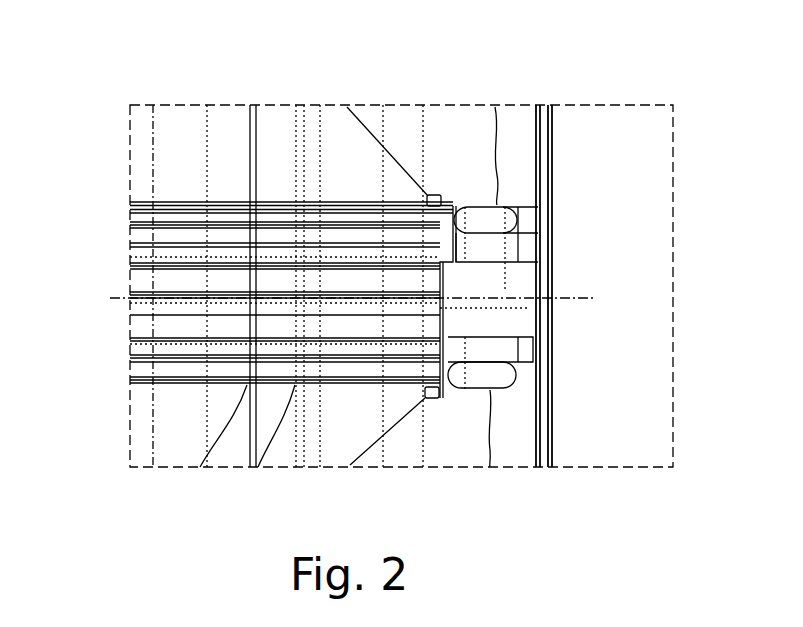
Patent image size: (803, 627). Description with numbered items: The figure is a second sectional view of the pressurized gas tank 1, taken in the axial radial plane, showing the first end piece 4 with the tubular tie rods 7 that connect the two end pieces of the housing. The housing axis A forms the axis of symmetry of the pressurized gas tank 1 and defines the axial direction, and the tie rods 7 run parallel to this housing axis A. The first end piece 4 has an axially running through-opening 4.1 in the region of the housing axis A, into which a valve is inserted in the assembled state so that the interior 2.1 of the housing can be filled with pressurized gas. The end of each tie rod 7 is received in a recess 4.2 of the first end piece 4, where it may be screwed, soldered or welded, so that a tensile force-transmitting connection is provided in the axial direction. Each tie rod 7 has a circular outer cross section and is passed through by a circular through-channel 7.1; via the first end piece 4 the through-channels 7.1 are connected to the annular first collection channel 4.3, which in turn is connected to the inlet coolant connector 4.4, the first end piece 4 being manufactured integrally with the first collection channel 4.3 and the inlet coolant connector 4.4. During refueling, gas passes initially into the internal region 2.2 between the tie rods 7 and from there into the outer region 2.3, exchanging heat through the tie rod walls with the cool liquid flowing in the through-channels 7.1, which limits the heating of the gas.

The pressurized gas tank 1 is at (183, 94).
The interior 2.1 is at (248, 158).
The internal region 2.2 is at (145, 275).
The outer region 2.3 is at (302, 130).
The first end piece 4 is at (446, 170).
The through-opening 4.1 is at (520, 284).
The recess 4.2 is at (455, 205).
The first collection channel 4.3 is at (507, 378).
The inlet coolant connector 4.4 is at (522, 204).
The tie rod 7 is at (333, 205).
The through-channel 7.1 is at (298, 205).
The housing axis A is at (570, 299).